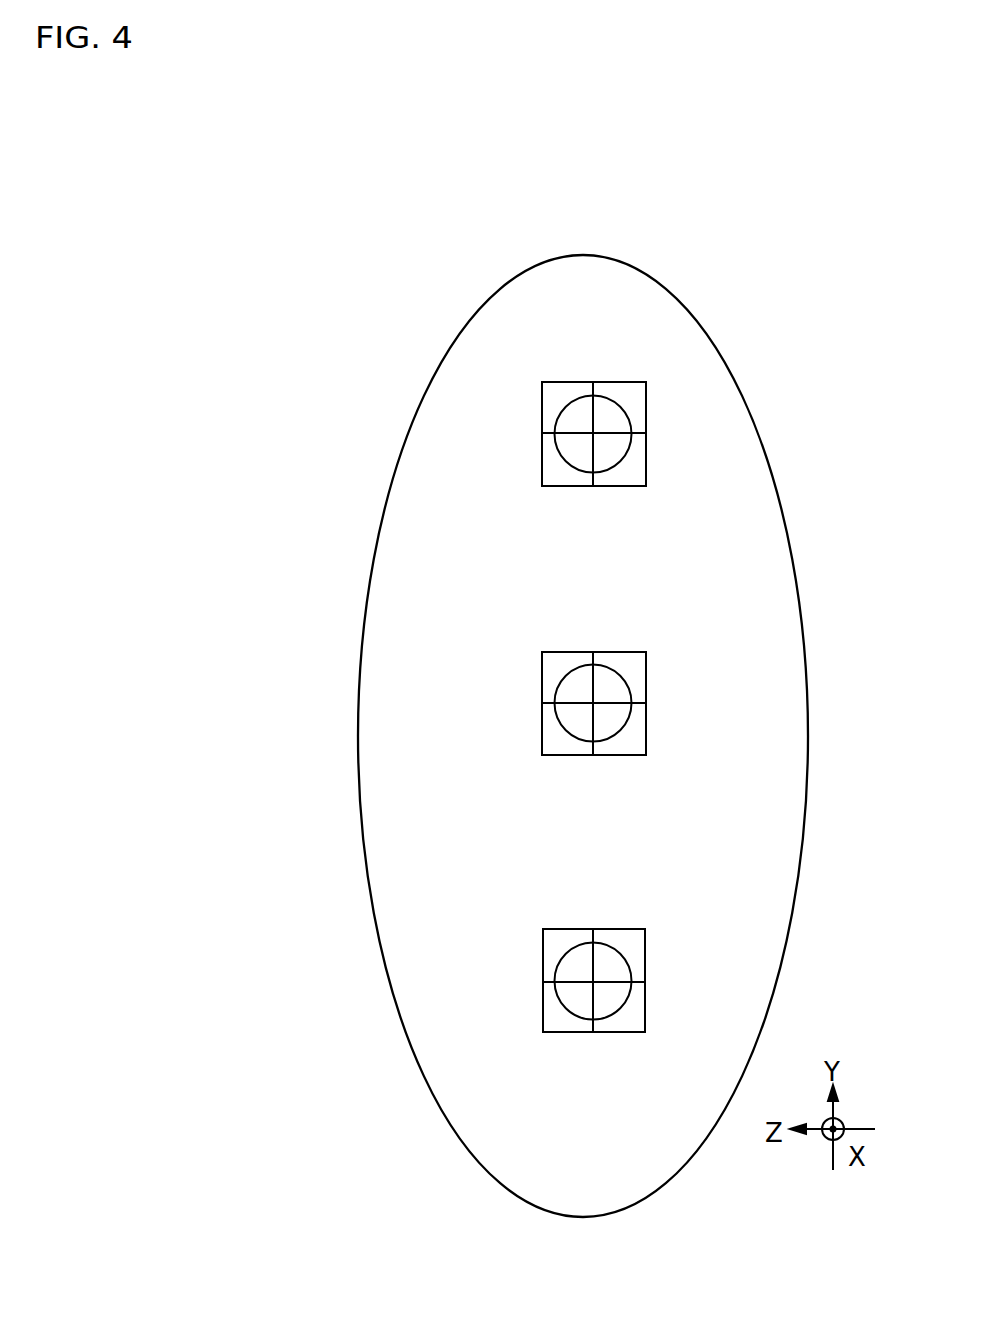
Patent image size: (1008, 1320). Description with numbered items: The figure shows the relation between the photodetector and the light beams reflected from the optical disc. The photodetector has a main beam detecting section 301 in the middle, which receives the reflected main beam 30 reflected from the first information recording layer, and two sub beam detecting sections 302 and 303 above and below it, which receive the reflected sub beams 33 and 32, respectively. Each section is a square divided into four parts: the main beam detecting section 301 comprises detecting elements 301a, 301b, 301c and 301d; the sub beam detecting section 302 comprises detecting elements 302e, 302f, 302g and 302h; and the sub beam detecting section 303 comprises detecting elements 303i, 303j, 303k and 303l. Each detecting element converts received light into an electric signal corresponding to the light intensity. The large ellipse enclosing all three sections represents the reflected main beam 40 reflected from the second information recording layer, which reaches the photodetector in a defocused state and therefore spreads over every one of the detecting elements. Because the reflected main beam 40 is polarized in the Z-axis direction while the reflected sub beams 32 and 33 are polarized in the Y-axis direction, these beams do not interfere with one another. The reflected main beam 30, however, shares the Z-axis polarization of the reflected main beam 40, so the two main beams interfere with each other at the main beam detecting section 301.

The reflected main beam 40 is at (795, 665).
The sub beam detecting section 302 is at (577, 417).
The detecting element 302g is at (557, 395).
The detecting element 302h is at (640, 418).
The detecting element 302f is at (565, 482).
The detecting element 302e is at (625, 485).
The reflected sub beam 33 is at (558, 450).
The main beam detecting section 301 is at (573, 690).
The detecting element 301a is at (558, 670).
The detecting element 301b is at (625, 662).
The detecting element 301c is at (633, 743).
The detecting element 301d is at (557, 747).
The reflected main beam 30 is at (567, 715).
The sub beam detecting section 303 is at (599, 996).
The detecting element 303i is at (565, 932).
The detecting element 303j is at (630, 952).
The detecting element 303k is at (563, 1025).
The detecting element 303l is at (640, 1020).
The reflected sub beam 32 is at (565, 965).